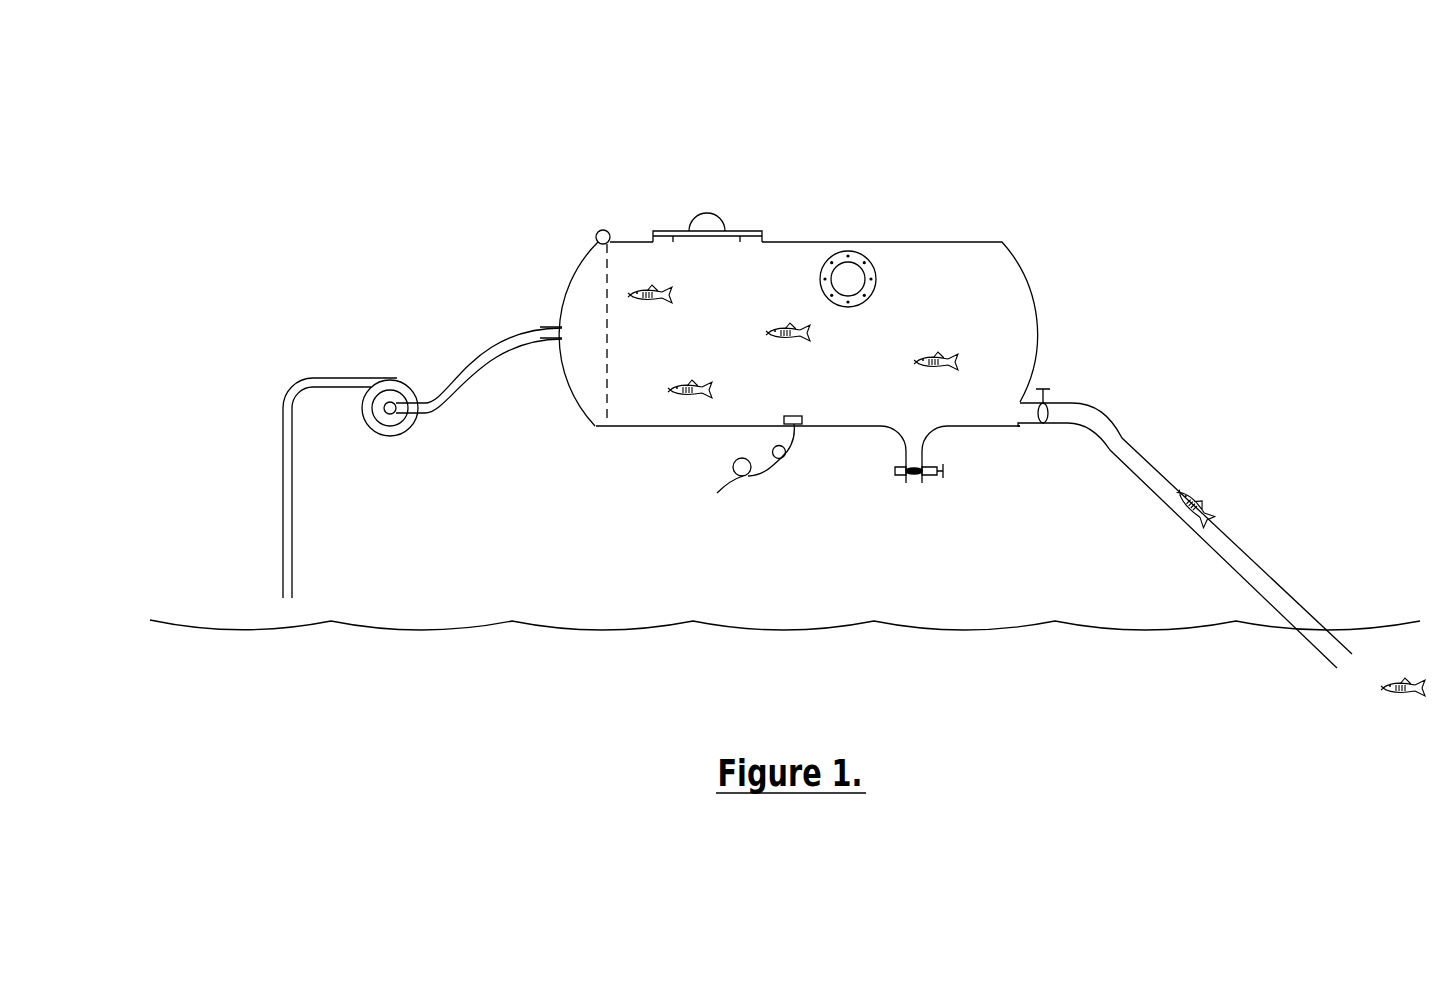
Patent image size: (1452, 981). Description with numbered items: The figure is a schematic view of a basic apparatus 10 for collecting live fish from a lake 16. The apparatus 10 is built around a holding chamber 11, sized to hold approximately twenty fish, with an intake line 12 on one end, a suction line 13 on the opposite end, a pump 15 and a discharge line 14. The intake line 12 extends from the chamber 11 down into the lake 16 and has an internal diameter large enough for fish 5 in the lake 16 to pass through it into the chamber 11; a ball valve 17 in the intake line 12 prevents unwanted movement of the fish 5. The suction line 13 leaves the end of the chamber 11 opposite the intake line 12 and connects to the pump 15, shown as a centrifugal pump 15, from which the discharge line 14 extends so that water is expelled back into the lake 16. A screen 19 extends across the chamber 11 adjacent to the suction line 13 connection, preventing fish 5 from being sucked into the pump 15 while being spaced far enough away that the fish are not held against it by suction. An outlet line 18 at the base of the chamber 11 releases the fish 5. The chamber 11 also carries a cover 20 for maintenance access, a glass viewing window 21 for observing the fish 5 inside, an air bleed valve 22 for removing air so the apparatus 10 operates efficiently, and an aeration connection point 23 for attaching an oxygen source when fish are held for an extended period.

The fish 5 is at (1197, 507).
The apparatus 10 is at (1072, 215).
The holding chamber 11 is at (1037, 316).
The intake line 12 is at (1137, 453).
The suction line 13 is at (505, 342).
The discharge line 14 is at (294, 387).
The pump 15 is at (393, 434).
The lake 16 is at (267, 645).
The ball valve 17 is at (1053, 403).
The outlet line 18 is at (915, 483).
The screen 19 is at (607, 392).
The cover 20 is at (695, 216).
The glass viewing window 21 is at (842, 262).
The air bleed valve 22 is at (599, 232).
The aeration connection point 23 is at (763, 480).